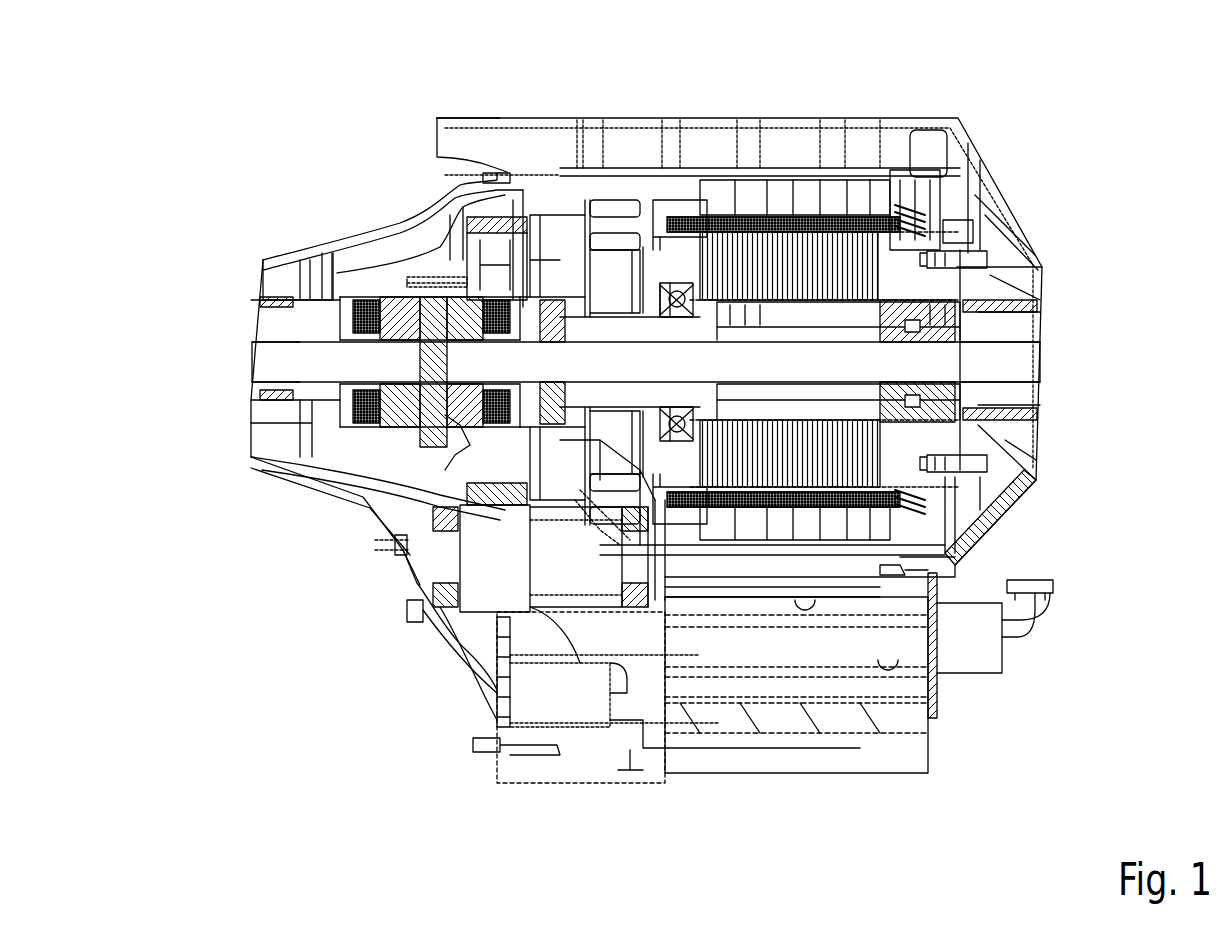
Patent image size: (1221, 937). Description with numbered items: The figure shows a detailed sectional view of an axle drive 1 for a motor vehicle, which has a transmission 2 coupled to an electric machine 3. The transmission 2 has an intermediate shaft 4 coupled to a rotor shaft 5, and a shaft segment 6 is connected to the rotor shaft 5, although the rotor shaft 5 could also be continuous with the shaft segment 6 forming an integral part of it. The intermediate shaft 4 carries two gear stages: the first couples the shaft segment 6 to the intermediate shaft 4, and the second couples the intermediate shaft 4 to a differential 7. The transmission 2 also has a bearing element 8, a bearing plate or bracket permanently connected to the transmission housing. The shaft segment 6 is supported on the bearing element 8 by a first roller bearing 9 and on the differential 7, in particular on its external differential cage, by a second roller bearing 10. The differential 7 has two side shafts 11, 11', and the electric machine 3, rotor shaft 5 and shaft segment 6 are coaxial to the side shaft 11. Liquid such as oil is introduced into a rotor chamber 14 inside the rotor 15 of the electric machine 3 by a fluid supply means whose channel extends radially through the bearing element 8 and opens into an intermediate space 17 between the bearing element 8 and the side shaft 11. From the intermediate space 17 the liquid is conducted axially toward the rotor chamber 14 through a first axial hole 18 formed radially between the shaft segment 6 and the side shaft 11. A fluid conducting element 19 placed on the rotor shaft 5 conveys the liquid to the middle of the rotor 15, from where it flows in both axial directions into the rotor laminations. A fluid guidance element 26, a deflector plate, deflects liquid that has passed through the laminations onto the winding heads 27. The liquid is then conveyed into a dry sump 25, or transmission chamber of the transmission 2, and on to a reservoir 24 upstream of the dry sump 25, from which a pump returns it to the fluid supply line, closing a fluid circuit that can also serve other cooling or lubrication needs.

The axle drive 1 is at (268, 178).
The transmission 2 is at (403, 627).
The electric machine 3 is at (890, 158).
The intermediate shaft 4 is at (513, 575).
The rotor shaft 5 is at (677, 296).
The shaft segment 6 is at (555, 300).
The differential 7 is at (400, 287).
The bearing element 8 is at (616, 316).
The first roller bearing 9 is at (556, 290).
The second roller bearing 10 is at (838, 322).
The side shaft 11 is at (1059, 341).
The side shaft 11' is at (212, 341).
The rotor chamber 14 is at (957, 267).
The rotor 15 is at (807, 287).
The intermediate space 17 is at (508, 447).
The first axial hole 18 is at (572, 355).
The fluid conducting element 19 is at (935, 420).
The reservoir 24 is at (832, 745).
The dry sump 25 is at (632, 785).
The fluid guidance element 26 is at (900, 240).
The winding heads 27 is at (903, 495).